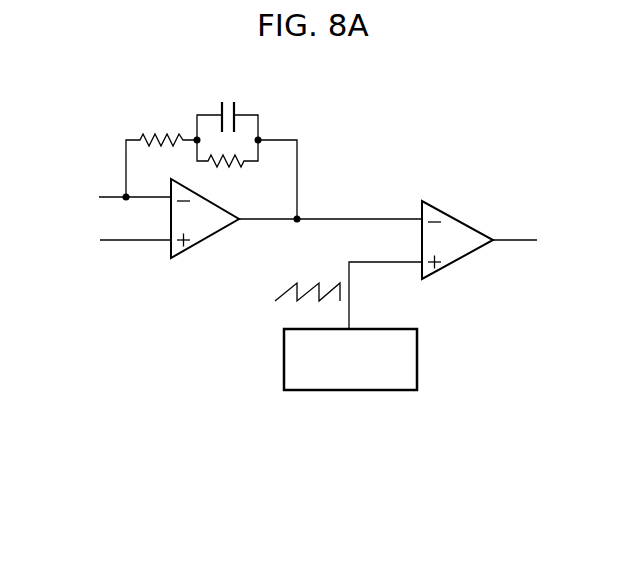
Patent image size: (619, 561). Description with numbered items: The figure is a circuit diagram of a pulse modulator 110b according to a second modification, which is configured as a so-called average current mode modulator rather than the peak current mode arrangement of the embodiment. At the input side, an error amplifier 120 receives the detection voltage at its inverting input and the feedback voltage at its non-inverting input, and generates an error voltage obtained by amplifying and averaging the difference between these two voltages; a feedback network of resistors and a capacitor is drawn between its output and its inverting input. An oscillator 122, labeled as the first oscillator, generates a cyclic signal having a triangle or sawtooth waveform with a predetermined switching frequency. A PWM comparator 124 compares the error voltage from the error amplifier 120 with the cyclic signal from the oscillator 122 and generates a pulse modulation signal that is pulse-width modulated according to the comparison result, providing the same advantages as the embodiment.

The pulse modulator 110b is at (351, 449).
The error amplifier 120 is at (203, 243).
The oscillator 122 is at (417, 356).
The PWM comparator 124 is at (457, 217).